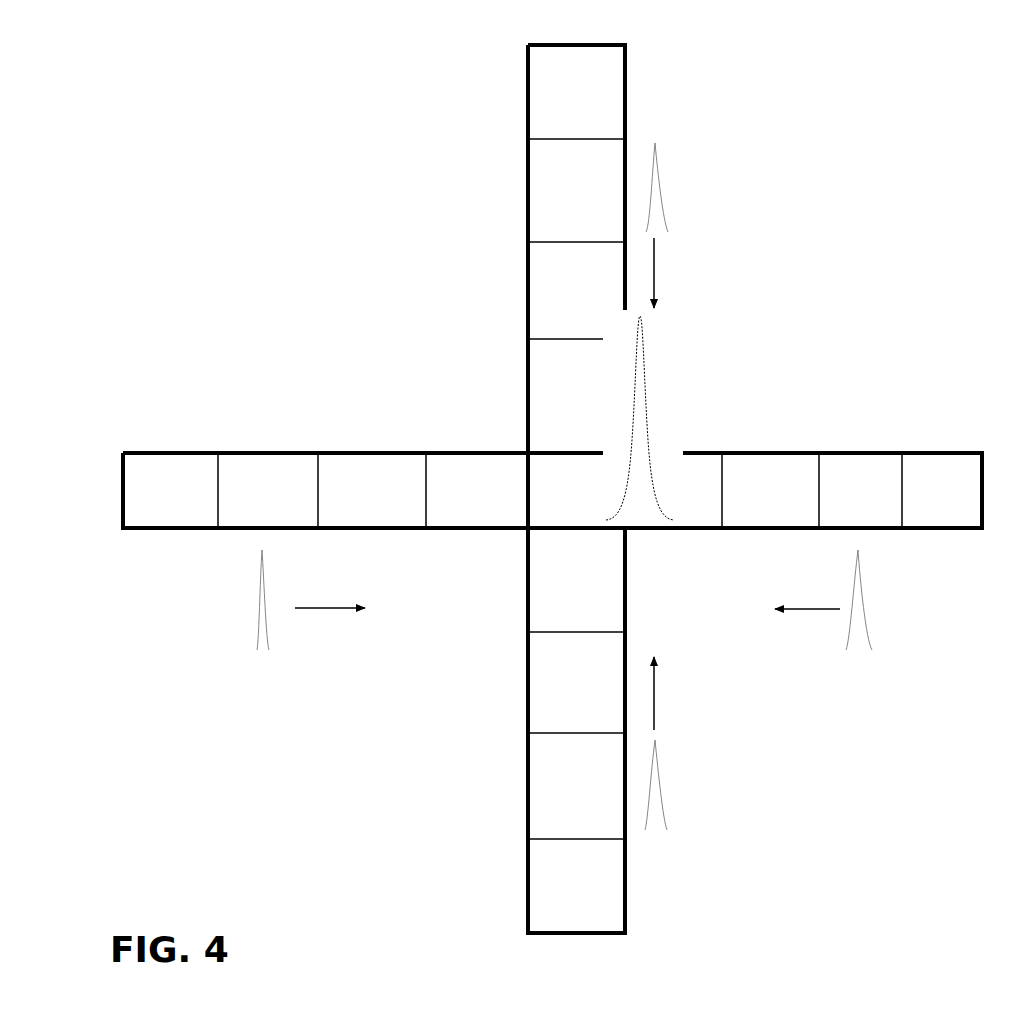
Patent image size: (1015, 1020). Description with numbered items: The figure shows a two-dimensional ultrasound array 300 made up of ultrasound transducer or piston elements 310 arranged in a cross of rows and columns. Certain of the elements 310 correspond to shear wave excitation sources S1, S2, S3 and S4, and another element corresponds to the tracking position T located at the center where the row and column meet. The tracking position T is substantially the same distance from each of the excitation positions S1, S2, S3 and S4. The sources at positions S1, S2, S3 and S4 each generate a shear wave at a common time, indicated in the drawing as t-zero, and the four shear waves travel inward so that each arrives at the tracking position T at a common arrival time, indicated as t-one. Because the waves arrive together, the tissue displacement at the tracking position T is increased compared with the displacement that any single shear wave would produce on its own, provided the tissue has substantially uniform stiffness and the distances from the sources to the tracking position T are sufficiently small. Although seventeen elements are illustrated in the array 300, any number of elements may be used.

The two-dimensional ultrasound array 300 is at (258, 262).
The ultrasound transducer or piston elements 310 is at (178, 530).
The shear wave excitation source S1 is at (268, 490).
The shear wave excitation source S2 is at (860, 490).
The shear wave excitation source S3 is at (576, 190).
The shear wave excitation source S4 is at (576, 786).
The tracking position T is at (576, 490).